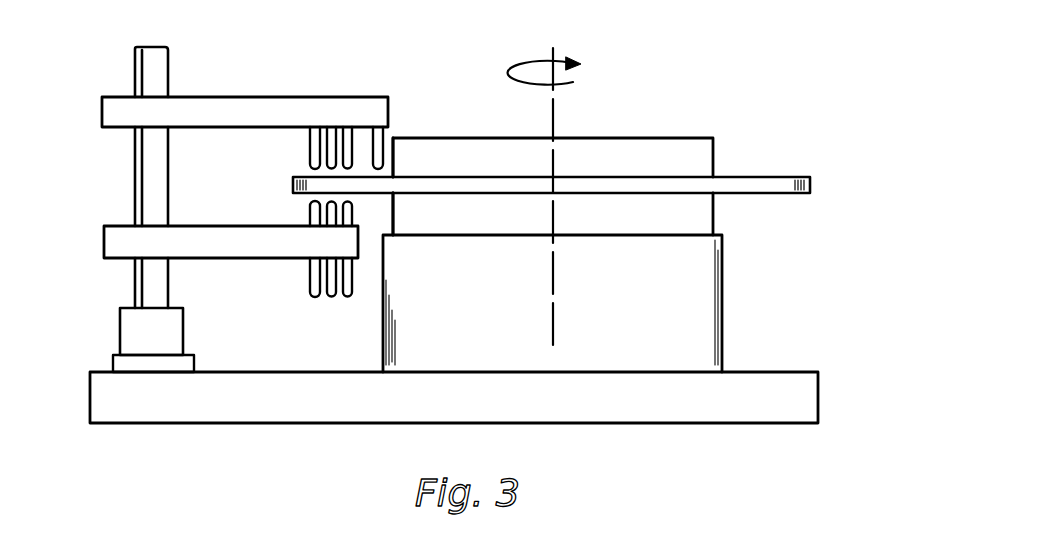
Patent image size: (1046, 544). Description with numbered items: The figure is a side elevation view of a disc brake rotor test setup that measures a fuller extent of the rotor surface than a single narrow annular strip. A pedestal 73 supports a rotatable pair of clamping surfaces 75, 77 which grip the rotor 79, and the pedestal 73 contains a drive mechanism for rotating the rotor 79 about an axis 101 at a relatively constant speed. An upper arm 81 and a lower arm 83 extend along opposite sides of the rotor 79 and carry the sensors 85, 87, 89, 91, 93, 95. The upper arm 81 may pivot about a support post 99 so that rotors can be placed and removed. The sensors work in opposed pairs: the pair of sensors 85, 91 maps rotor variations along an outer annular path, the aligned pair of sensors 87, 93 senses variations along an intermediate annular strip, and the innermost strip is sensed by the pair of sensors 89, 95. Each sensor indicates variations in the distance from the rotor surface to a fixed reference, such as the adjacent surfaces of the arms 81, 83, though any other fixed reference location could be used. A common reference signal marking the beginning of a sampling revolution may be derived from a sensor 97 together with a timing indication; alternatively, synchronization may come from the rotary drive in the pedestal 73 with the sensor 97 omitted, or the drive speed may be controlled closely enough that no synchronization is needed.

The pedestal 73 is at (650, 345).
The clamping surface 75 is at (700, 221).
The clamping surface 77 is at (655, 152).
The rotor 79 is at (745, 188).
The upper arm 81 is at (118, 118).
The lower arm 83 is at (113, 260).
The sensor 85 is at (310, 150).
The sensor 87 is at (325, 130).
The sensor 89 is at (355, 168).
The sensor 91 is at (310, 280).
The sensor 93 is at (331, 300).
The sensor 95 is at (352, 292).
The sensor 97 is at (392, 142).
The support post 99 is at (135, 50).
The axis 101 is at (553, 50).